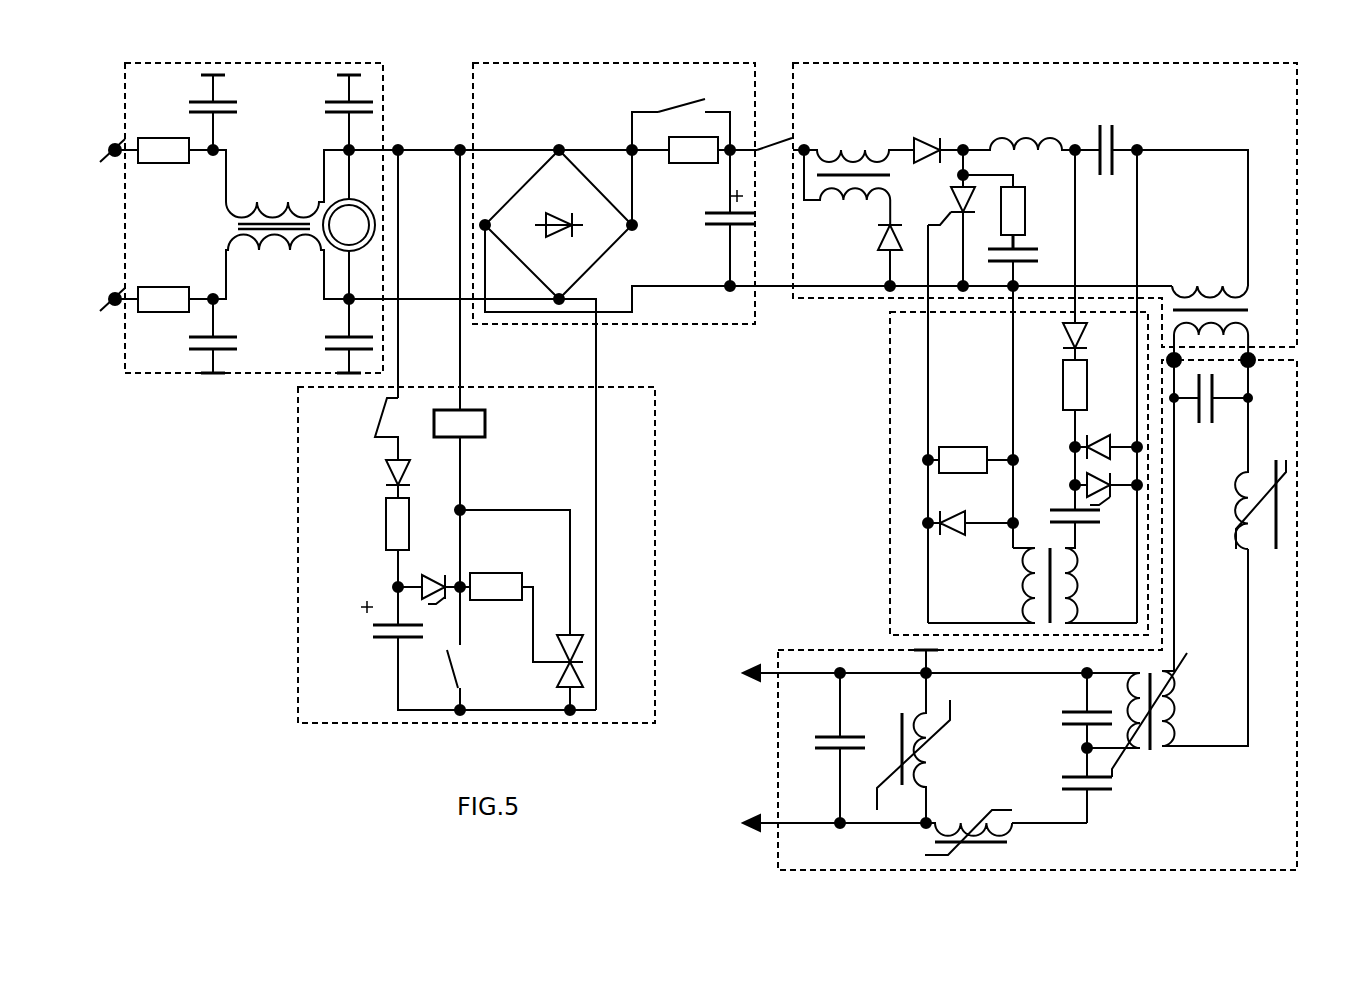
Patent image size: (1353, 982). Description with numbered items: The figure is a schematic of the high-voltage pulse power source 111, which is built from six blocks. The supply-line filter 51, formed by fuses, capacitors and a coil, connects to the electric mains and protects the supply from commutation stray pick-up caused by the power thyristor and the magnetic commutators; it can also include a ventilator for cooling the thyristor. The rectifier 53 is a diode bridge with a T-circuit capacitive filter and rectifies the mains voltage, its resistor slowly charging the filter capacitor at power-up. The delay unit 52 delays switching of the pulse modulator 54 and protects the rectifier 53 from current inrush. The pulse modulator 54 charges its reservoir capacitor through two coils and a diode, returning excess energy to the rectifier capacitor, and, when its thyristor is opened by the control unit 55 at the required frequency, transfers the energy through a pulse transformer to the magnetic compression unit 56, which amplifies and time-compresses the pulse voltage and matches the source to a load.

The supply-line filter 51 is at (298, 70).
The delay unit 52 is at (297, 585).
The rectifier 53 is at (593, 70).
The pulse modulator 54 is at (1000, 70).
The control unit 55 is at (885, 537).
The magnetic compression unit 56 is at (778, 788).
The high-voltage pulse power source 111 is at (238, 737).